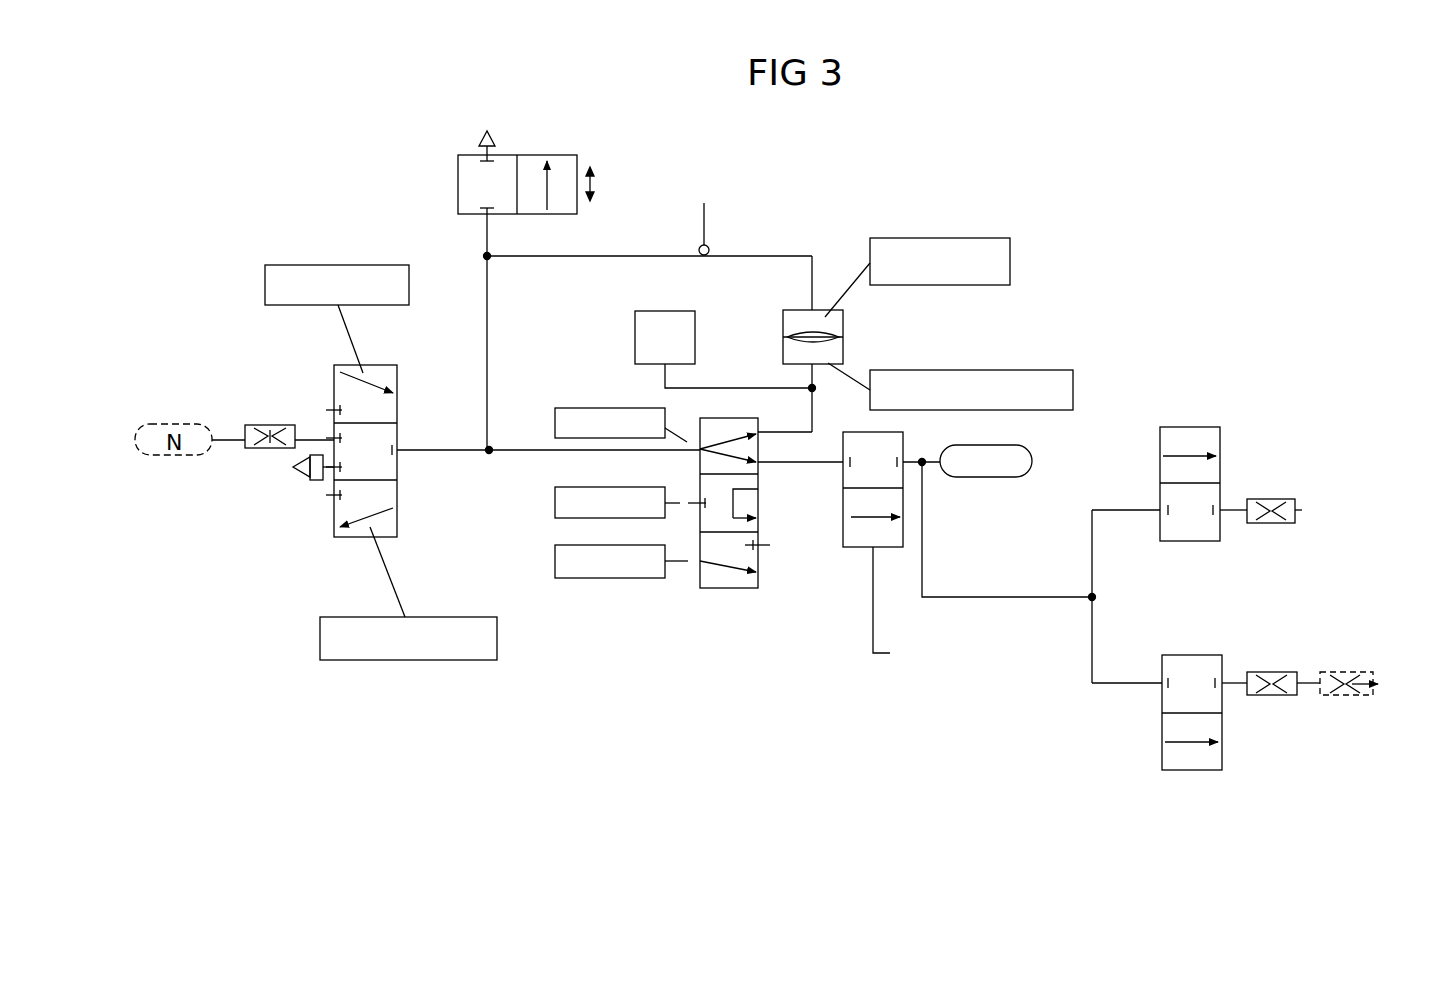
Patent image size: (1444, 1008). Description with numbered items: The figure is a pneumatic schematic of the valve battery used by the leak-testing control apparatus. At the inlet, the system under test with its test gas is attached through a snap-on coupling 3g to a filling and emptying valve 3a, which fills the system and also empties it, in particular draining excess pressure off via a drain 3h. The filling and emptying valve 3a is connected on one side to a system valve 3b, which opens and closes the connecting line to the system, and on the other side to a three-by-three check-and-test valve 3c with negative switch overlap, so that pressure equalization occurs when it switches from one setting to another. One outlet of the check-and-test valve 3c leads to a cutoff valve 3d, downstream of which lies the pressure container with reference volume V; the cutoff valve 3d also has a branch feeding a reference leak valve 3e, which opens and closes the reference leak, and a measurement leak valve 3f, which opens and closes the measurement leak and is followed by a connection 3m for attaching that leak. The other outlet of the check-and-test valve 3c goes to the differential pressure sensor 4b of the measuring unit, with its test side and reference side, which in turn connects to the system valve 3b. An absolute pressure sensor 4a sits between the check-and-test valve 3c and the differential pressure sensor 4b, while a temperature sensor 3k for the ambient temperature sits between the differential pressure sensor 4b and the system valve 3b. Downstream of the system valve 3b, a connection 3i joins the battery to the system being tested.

The filling and emptying valve 3a is at (347, 538).
The system valve 3b is at (481, 190).
The 3/3 check-and-test valve 3c is at (755, 560).
The cutoff valve 3d is at (929, 557).
The reference leak valve 3e is at (1181, 438).
The measurement leak valve 3f is at (1187, 760).
The snap-on coupling 3g is at (270, 425).
The drain 3h is at (301, 480).
The connection 3i is at (749, 300).
The temperature sensor 3k is at (778, 212).
The connection 3m is at (1312, 701).
The absolute pressure sensor 4a is at (656, 335).
The differential pressure sensor 4b is at (977, 324).